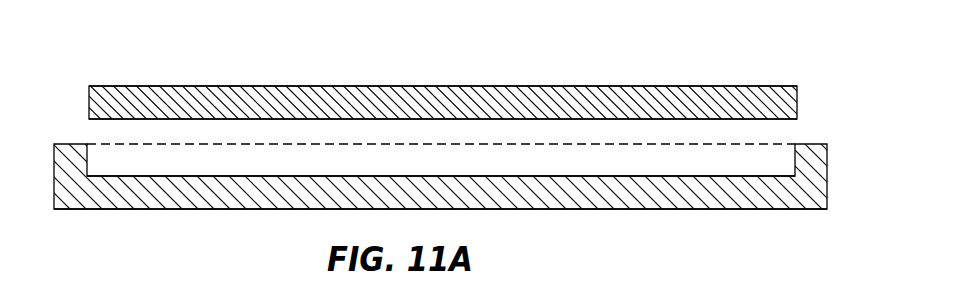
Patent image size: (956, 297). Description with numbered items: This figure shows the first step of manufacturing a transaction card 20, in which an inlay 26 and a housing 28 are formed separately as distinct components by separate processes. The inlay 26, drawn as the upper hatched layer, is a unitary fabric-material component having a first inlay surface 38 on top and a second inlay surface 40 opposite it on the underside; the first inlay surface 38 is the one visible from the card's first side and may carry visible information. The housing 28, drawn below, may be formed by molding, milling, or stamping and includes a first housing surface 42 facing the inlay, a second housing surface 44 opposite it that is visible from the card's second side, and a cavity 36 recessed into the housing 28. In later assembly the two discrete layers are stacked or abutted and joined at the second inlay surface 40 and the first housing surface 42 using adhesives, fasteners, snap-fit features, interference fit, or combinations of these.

The transaction card 20 is at (443, 133).
The inlay 26 is at (324, 101).
The housing 28 is at (302, 190).
The cavity 36 is at (441, 160).
The first inlay surface 38 is at (583, 86).
The second inlay surface 40 is at (527, 119).
The first housing surface 42 is at (160, 176).
The second housing surface 44 is at (182, 209).